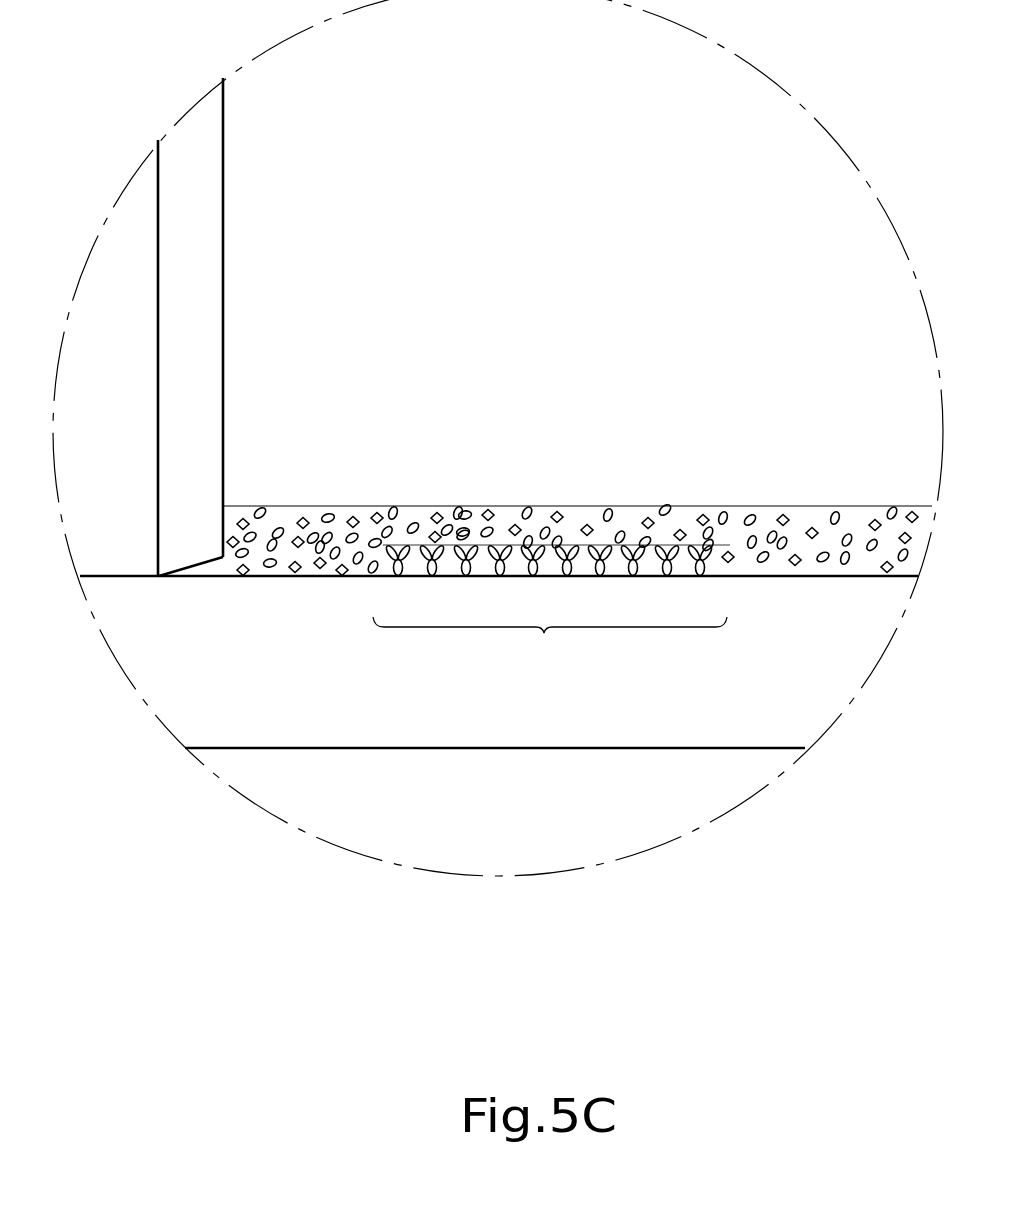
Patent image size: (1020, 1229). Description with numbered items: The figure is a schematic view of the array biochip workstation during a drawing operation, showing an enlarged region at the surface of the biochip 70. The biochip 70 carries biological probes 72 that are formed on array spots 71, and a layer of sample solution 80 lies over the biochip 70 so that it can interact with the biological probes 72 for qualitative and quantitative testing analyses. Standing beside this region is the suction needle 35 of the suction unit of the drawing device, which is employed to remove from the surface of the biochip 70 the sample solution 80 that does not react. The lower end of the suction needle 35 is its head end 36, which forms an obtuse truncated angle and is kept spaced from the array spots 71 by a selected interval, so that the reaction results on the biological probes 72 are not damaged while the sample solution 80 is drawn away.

The suction needle 35 is at (194, 327).
The head end 36 is at (193, 553).
The biochip 70 is at (297, 672).
The array spots 71 is at (550, 644).
The biological probes 72 is at (705, 565).
The sample solution 80 is at (736, 516).